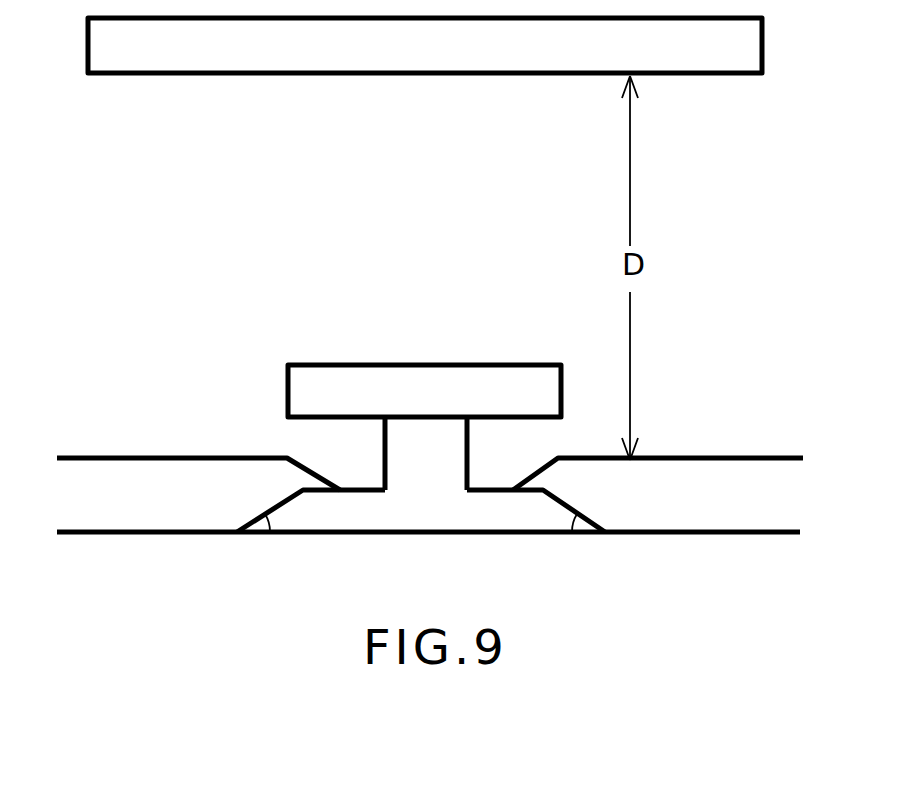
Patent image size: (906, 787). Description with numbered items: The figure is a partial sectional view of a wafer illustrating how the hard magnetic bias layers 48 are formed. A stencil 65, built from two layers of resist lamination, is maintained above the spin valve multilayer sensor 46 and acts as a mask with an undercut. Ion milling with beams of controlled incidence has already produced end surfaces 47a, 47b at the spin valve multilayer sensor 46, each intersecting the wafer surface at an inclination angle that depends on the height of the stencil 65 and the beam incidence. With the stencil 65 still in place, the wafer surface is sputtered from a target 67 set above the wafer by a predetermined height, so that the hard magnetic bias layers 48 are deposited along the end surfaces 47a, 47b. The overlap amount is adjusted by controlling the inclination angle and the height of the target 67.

The target 67 is at (695, 76).
The stencil 65 is at (456, 364).
The spin valve multilayer sensor 46 is at (447, 514).
The end surface 47a is at (270, 512).
The end surface 47b is at (573, 520).
The hard magnetic bias layer 48 is at (84, 466).